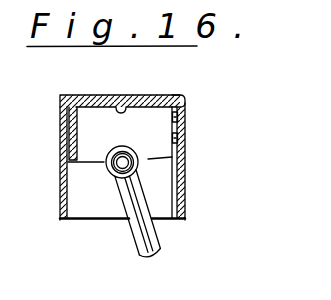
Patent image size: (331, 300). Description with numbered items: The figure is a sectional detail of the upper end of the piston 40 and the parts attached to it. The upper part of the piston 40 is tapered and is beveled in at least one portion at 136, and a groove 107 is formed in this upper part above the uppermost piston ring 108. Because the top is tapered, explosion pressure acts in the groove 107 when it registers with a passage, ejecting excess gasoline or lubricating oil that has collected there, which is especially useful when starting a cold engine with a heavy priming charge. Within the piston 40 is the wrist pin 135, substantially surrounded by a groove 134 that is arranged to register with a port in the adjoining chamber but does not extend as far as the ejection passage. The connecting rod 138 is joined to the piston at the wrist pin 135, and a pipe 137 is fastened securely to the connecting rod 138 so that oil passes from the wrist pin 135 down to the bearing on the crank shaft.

The piston 40 is at (186, 193).
The groove 107 is at (186, 103).
The piston ring 108 is at (180, 119).
The groove 134 is at (185, 160).
The wrist pin 135 is at (123, 163).
The beveled portion 136 is at (178, 95).
The pipe 137 is at (156, 233).
The connecting rod 138 is at (139, 247).